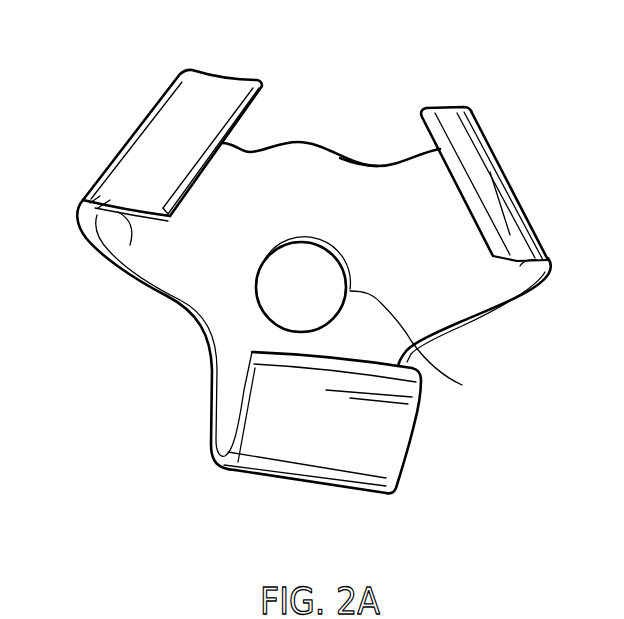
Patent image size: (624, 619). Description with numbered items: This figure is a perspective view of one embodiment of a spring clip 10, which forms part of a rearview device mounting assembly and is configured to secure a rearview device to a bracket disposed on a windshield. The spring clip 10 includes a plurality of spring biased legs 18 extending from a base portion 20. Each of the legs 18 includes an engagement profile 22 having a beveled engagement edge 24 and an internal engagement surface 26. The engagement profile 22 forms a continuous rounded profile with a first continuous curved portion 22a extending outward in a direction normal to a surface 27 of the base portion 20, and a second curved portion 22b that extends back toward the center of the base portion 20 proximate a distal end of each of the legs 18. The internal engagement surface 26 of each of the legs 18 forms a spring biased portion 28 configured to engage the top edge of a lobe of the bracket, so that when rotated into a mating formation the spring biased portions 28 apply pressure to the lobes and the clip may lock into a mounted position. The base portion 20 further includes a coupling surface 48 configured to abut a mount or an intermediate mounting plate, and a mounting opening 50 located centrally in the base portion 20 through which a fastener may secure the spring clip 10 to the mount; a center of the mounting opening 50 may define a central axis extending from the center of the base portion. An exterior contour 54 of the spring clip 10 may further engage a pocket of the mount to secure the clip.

The spring clip 10 is at (499, 72).
The spring biased legs 18 is at (148, 133).
The base portion 20 is at (331, 123).
The engagement profile 22 is at (316, 244).
The first continuous curved portion 22a is at (140, 246).
The second curved portion 22b is at (194, 68).
The beveled engagement edge 24 is at (113, 197).
The internal engagement surface 26 is at (120, 255).
The surface of the base portion 27 is at (374, 242).
The spring biased portion 28 is at (201, 104).
The coupling surface 48 is at (297, 138).
The mounting opening 50 is at (420, 345).
The exterior contour 54 is at (369, 125).